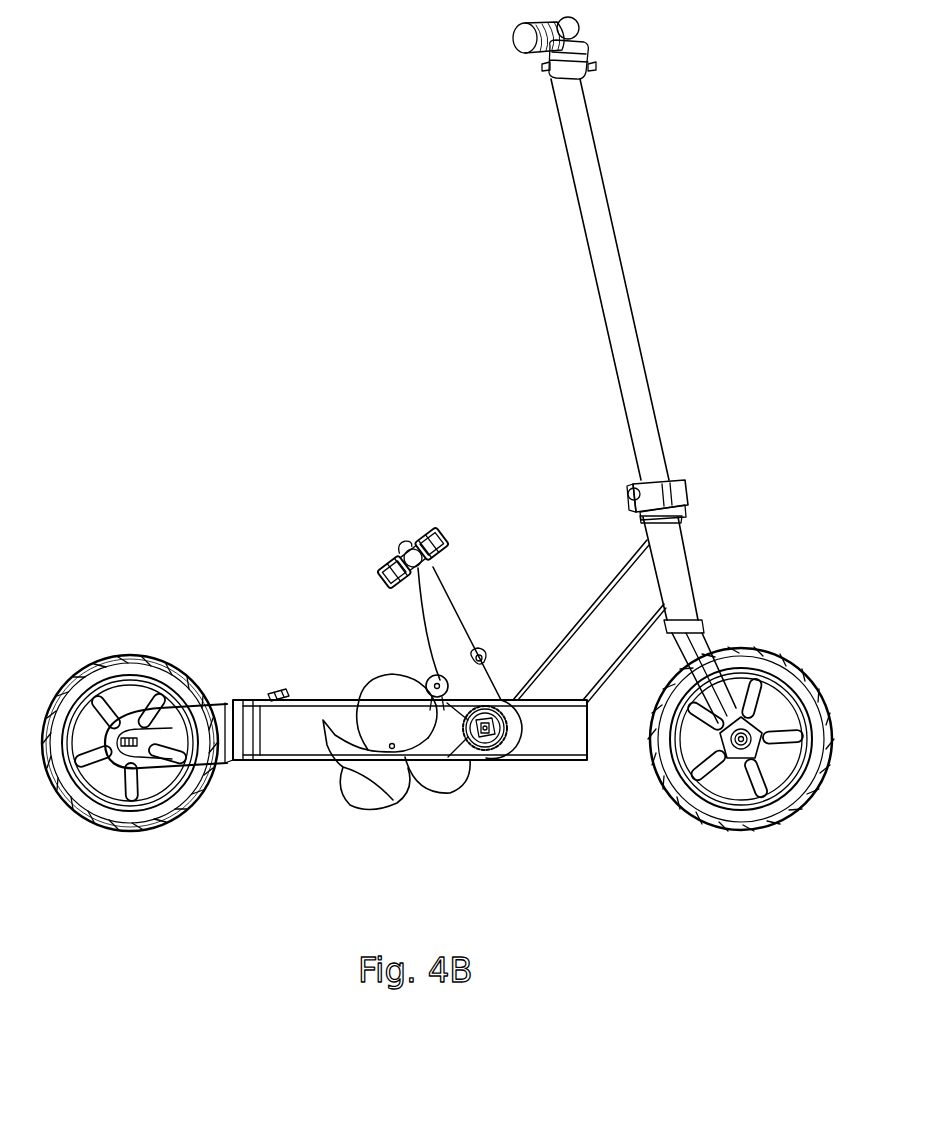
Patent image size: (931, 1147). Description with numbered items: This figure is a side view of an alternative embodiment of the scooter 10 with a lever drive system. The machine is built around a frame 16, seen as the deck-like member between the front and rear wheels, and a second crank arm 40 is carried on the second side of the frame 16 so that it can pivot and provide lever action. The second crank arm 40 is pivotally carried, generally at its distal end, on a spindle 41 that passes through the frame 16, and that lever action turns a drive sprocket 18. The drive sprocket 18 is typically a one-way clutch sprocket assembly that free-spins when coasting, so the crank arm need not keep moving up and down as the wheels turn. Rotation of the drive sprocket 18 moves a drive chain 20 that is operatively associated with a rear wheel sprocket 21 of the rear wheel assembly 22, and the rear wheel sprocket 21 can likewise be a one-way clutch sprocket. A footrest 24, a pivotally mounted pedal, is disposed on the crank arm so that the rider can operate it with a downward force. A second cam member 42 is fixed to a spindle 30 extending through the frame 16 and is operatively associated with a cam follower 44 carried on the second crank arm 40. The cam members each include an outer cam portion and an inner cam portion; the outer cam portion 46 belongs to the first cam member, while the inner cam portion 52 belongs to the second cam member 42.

The scooter 10 is at (607, 570).
The frame 16 is at (553, 748).
The drive sprocket 18 is at (468, 745).
The drive chain 20 is at (307, 708).
The rear wheel sprocket 21 is at (128, 785).
The wheel assembly 22 is at (169, 638).
The footrest 24 is at (283, 686).
The spindle 30 is at (394, 750).
The second crank arm 40 is at (452, 608).
The spindle 41 is at (512, 735).
The second cam member 42 is at (390, 683).
The cam follower 44 is at (431, 683).
The outer cam portion 46 is at (363, 797).
The inner cam portion 52 is at (440, 772).